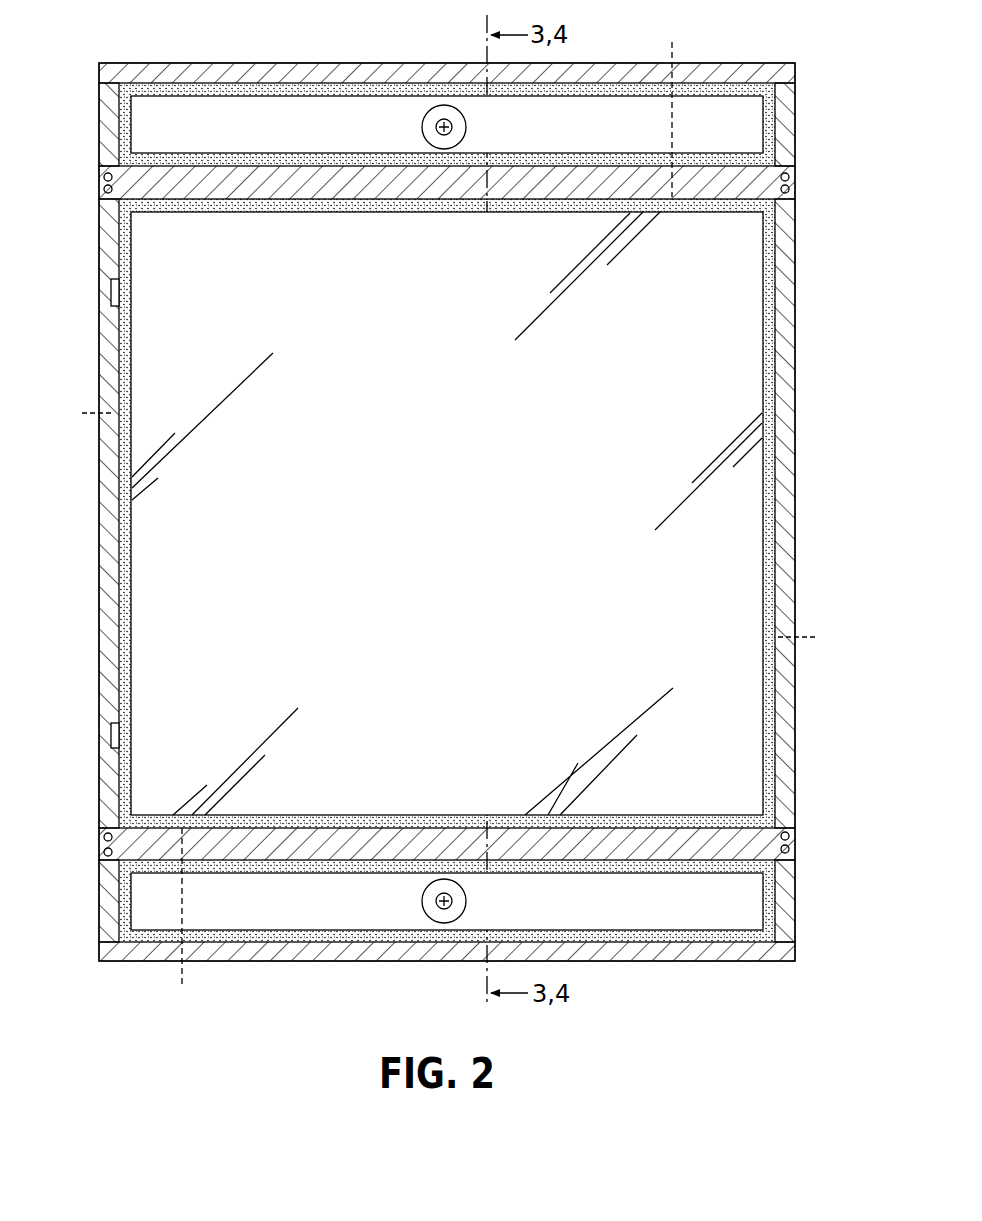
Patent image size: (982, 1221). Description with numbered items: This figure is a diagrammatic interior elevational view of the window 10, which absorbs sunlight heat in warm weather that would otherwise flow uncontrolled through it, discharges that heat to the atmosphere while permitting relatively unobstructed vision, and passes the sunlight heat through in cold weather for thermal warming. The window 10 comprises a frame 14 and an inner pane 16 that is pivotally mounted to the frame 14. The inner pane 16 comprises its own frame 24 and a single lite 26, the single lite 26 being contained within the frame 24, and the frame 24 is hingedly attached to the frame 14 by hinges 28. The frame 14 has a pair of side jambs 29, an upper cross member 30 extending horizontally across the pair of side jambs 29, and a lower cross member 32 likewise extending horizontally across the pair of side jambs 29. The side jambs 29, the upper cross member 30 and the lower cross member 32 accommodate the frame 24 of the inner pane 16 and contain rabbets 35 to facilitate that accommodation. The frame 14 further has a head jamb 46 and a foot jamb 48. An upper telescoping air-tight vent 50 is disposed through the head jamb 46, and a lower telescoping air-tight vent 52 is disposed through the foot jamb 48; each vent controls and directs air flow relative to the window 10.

The window 10 is at (813, 262).
The frame 14 is at (447, 543).
The inner pane 16 is at (447, 513).
The frame of the inner pane 24 is at (761, 386).
The single lite 26 is at (447, 513).
The hinges 28 is at (104, 284).
The side jambs 29 is at (108, 571).
The upper cross member 30 is at (218, 178).
The lower cross member 32 is at (320, 857).
The rabbets 35 is at (451, 513).
The head jamb 46 is at (279, 116).
The foot jamb 48 is at (655, 915).
The upper telescoping air-tight vent 50 is at (428, 112).
The lower telescoping air-tight vent 52 is at (432, 914).